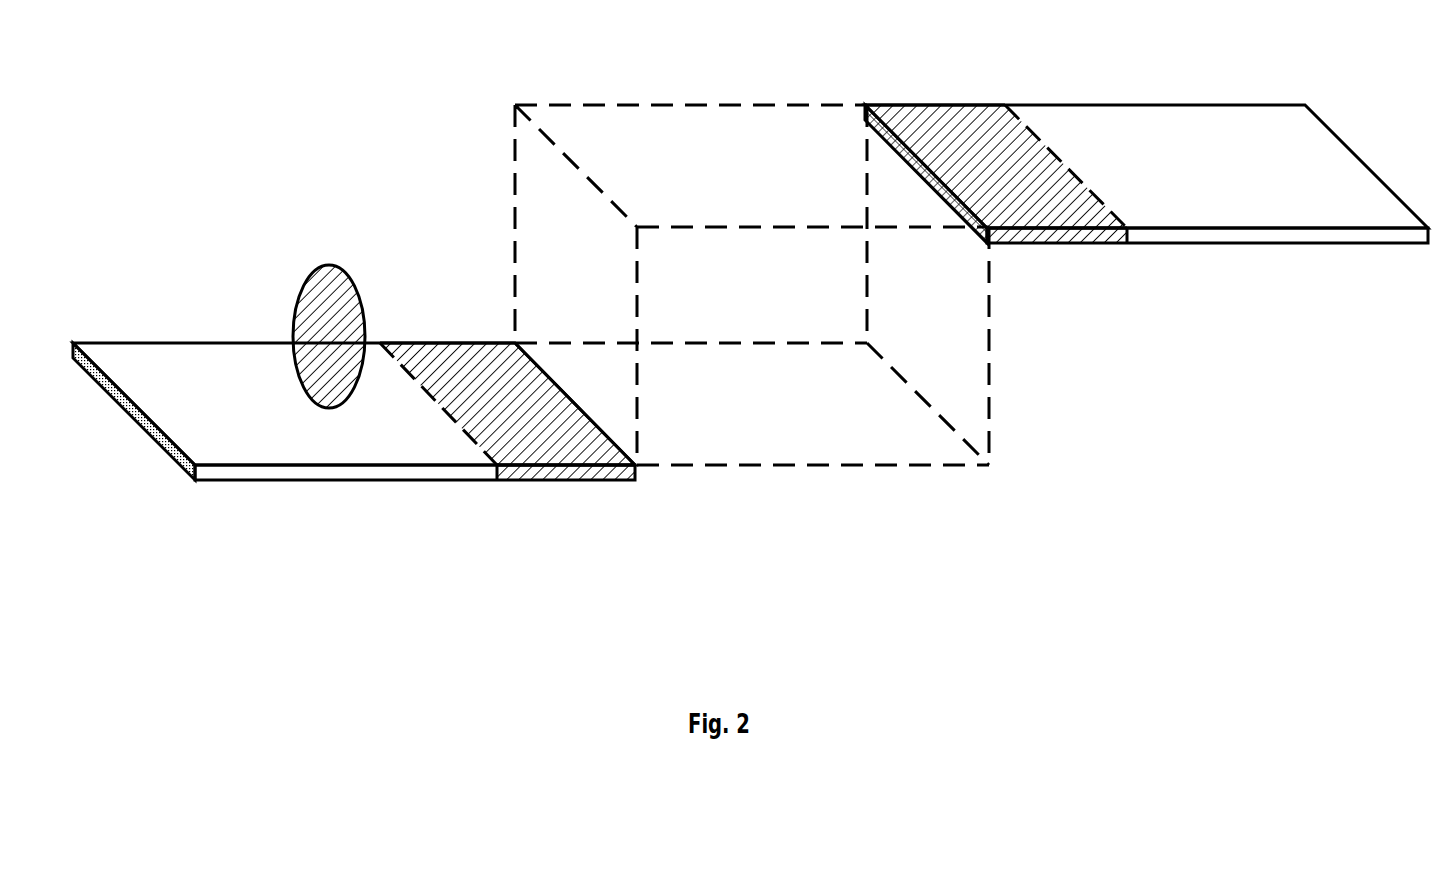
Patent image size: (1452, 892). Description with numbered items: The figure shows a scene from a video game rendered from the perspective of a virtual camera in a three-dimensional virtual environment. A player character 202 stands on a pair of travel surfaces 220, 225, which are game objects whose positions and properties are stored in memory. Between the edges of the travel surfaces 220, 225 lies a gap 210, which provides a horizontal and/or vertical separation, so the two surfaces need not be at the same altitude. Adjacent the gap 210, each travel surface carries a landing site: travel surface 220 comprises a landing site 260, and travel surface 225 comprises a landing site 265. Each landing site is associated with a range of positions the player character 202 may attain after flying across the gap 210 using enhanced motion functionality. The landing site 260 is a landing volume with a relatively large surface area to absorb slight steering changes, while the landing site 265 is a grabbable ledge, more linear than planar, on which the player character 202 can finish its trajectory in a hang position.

The player character 202 is at (329, 266).
The gap 210 is at (777, 440).
The travel surface 220 is at (385, 438).
The travel surface 225 is at (1125, 125).
The landing site 260 is at (540, 438).
The landing site 265 is at (1022, 30).